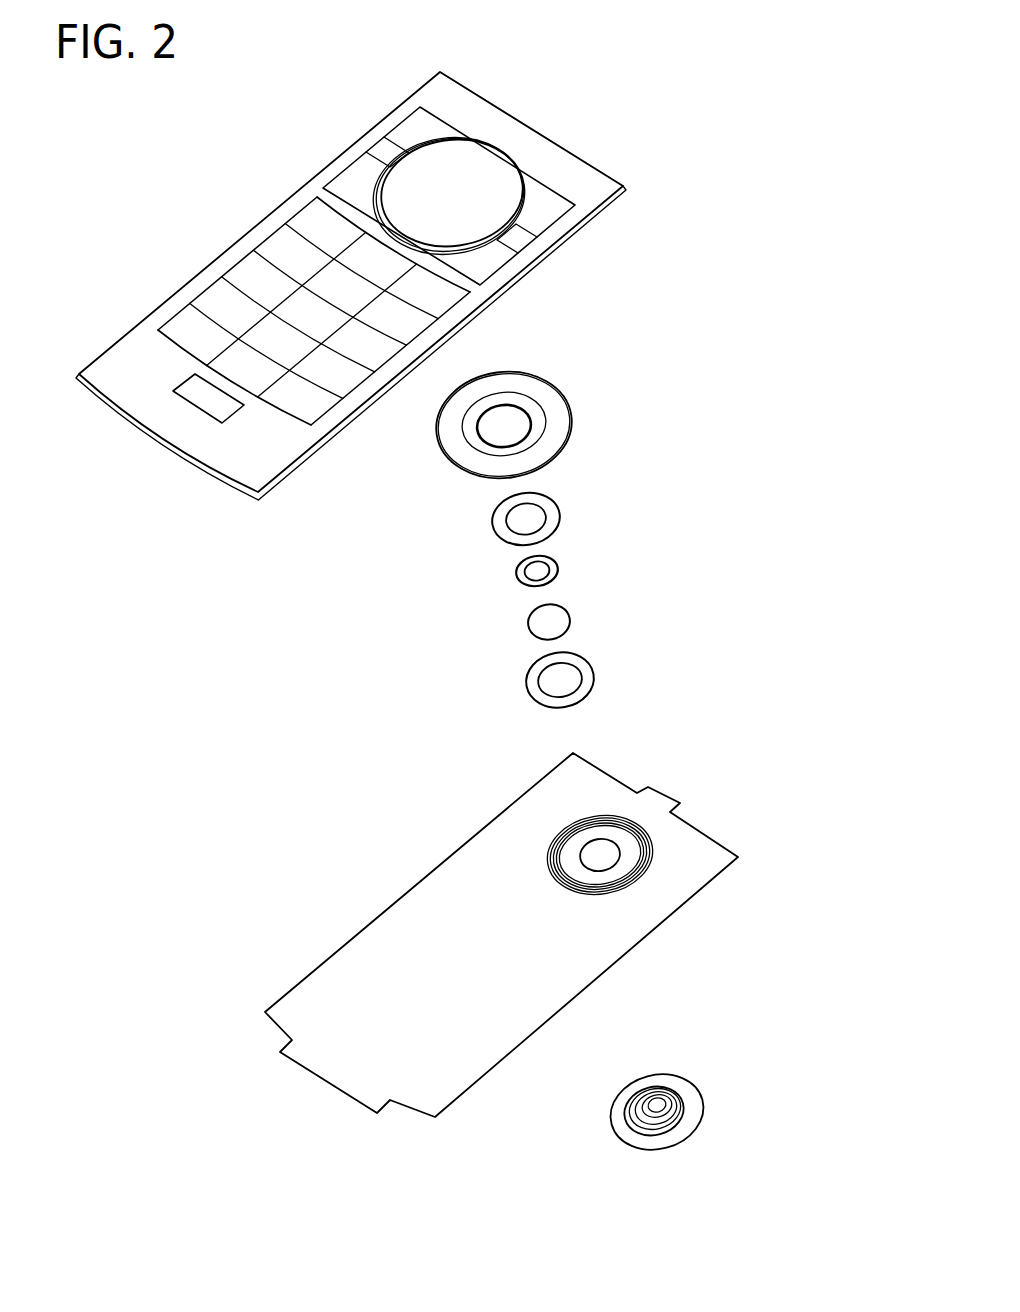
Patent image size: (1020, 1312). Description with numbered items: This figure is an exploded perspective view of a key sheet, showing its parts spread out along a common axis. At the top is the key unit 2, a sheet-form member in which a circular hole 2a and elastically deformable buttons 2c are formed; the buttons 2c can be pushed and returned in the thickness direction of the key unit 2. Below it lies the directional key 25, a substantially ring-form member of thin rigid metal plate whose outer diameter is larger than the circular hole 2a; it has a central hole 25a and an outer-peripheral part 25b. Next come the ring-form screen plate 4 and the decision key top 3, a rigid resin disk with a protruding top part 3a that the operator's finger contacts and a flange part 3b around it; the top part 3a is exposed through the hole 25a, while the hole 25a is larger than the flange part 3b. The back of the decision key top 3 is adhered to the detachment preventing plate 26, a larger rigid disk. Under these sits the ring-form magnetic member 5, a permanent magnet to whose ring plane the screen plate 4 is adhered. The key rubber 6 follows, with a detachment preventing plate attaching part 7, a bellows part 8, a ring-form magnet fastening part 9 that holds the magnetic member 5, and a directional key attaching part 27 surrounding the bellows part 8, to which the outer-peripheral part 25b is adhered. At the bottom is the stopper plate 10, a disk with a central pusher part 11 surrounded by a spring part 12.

The key unit 2 is at (296, 203).
The circular hole 2a is at (500, 156).
The buttons 2c is at (181, 324).
The directional key 25 is at (519, 409).
The hole 25a is at (510, 410).
The outer-peripheral part 25b is at (560, 420).
The screen plate 4 is at (497, 530).
The decision key top 3 is at (543, 568).
The top part 3a is at (541, 568).
The flange part 3b is at (557, 575).
The detachment preventing plate 26 is at (535, 625).
The ring-form magnetic member 5 is at (535, 692).
The key rubber 6 is at (373, 938).
The detachment preventing plate attaching part 7 is at (598, 848).
The bellows part 8 is at (650, 838).
The ring-form magnet fastening part 9 is at (625, 865).
The directional key attaching part 27 is at (627, 892).
The stopper plate 10 is at (617, 1118).
The pusher part 11 is at (677, 1117).
The spring part 12 is at (687, 1103).